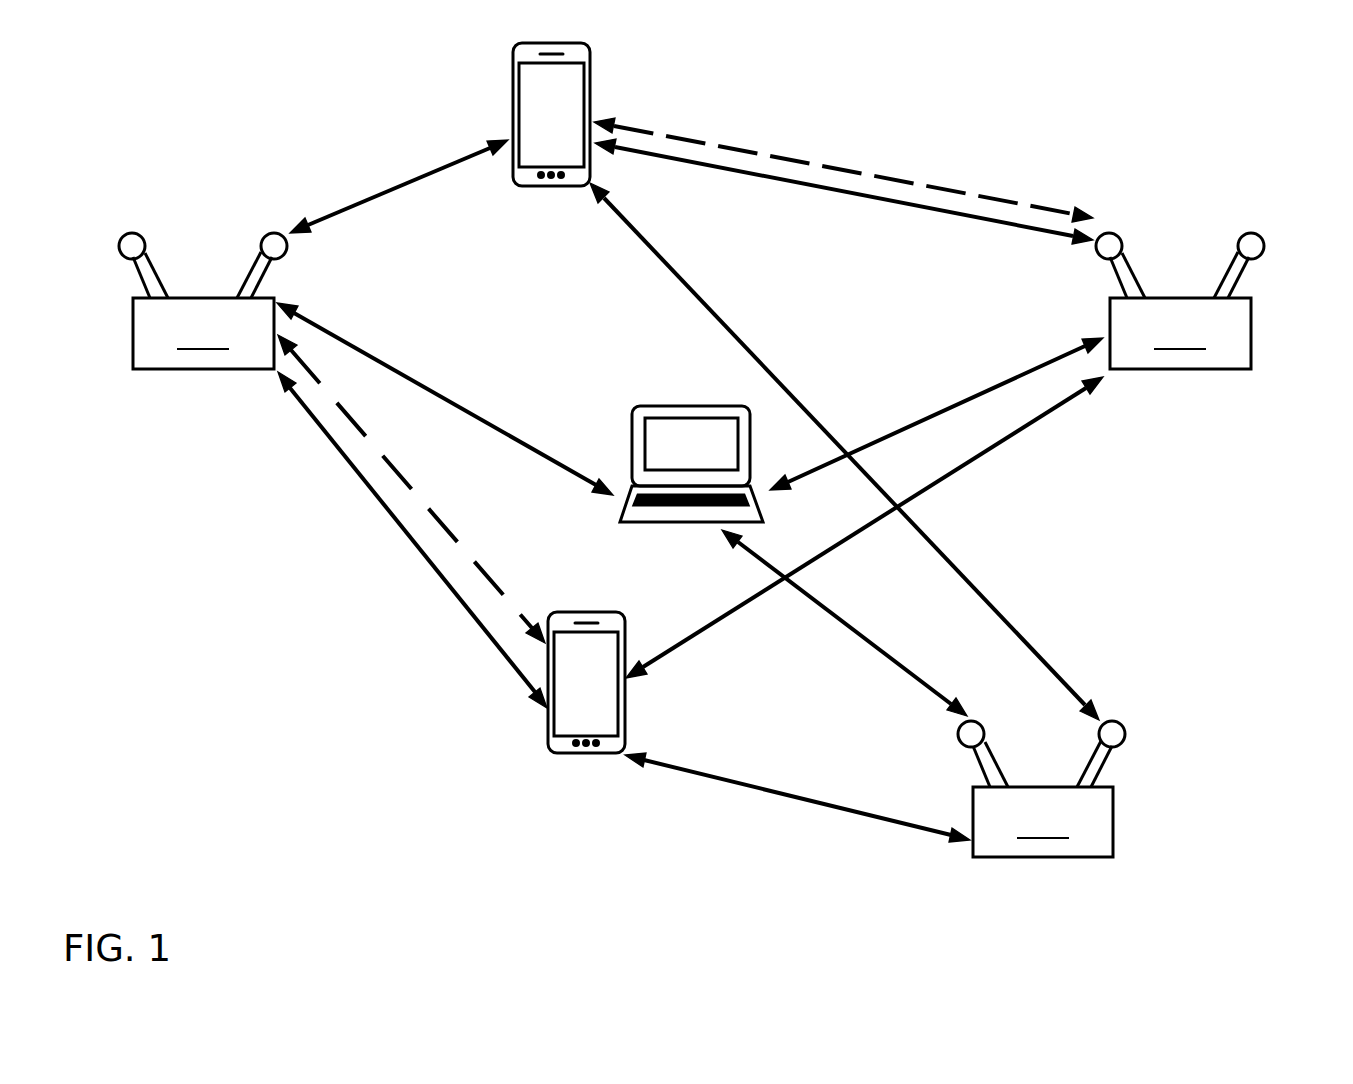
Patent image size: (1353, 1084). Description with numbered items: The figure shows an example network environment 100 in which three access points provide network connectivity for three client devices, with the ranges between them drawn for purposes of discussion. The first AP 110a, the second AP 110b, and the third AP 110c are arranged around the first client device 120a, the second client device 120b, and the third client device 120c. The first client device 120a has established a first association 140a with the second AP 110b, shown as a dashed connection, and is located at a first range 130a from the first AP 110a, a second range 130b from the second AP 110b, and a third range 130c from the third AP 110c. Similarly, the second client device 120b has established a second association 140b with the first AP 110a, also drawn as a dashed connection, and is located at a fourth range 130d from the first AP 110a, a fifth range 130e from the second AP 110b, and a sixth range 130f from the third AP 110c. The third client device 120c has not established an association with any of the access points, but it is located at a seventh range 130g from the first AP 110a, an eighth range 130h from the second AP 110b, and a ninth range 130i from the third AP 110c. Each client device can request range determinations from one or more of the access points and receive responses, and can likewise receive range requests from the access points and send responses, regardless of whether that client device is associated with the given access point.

The network environment 100 is at (1261, 147).
The first AP 110a is at (203, 301).
The second AP 110b is at (1180, 301).
The third AP 110c is at (1041, 789).
The first client device 120a is at (587, 88).
The second client device 120b is at (622, 716).
The third client device 120c is at (692, 403).
The first range 130a is at (407, 186).
The second range 130b is at (853, 192).
The third range 130c is at (937, 550).
The fourth range 130d is at (450, 592).
The fifth range 130e is at (1060, 408).
The sixth range 130f is at (770, 790).
The seventh range 130g is at (503, 427).
The eighth range 130h is at (918, 418).
The ninth range 130i is at (832, 617).
The first association 140a is at (894, 175).
The second association 140b is at (470, 553).